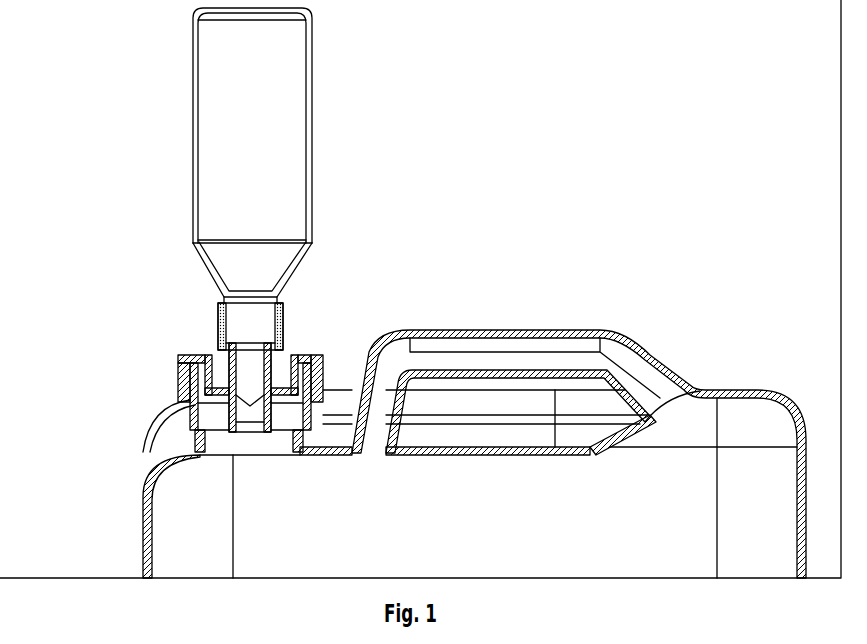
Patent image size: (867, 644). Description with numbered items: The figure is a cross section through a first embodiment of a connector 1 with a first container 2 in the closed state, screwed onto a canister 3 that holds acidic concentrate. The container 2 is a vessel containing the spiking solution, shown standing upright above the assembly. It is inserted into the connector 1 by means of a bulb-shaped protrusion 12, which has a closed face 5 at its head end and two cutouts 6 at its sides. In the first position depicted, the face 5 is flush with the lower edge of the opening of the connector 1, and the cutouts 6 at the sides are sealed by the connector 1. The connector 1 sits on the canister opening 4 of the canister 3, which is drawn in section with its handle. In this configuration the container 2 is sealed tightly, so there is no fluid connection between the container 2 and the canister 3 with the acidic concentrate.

The connector 1 is at (322, 356).
The first container 2 is at (313, 136).
The canister 3 is at (562, 330).
The canister opening 4 is at (193, 402).
The face 5 is at (252, 432).
The cutouts 6 is at (188, 398).
The bulb-shaped protrusion 12 is at (186, 355).